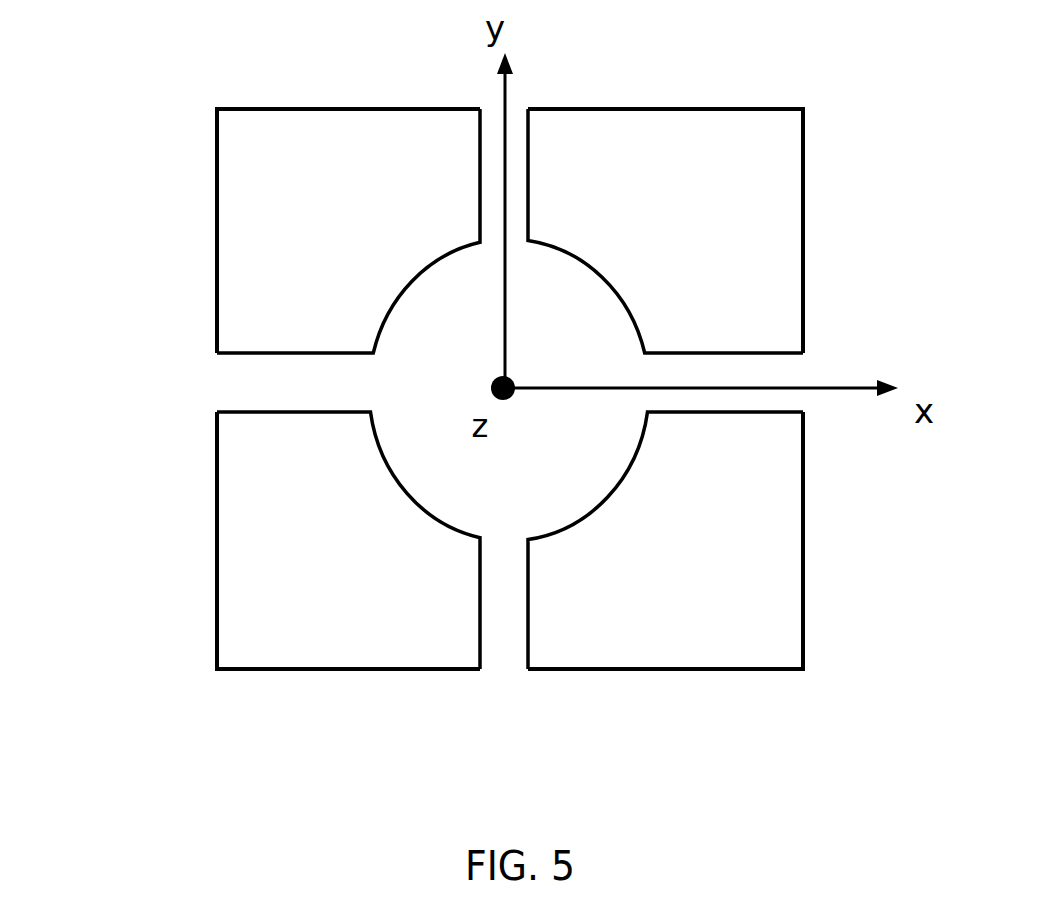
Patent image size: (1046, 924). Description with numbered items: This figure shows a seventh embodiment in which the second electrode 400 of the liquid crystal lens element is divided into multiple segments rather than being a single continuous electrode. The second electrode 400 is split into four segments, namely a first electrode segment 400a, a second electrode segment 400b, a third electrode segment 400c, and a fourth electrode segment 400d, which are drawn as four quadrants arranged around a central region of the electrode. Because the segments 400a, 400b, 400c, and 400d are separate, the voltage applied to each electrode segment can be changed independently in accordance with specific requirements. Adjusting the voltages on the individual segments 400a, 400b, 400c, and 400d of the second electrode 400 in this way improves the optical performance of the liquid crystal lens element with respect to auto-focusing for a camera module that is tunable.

The second electrode 400 is at (427, 389).
The electrode segment 400a is at (612, 143).
The electrode segment 400b is at (360, 143).
The electrode segment 400c is at (360, 657).
The electrode segment 400d is at (660, 635).